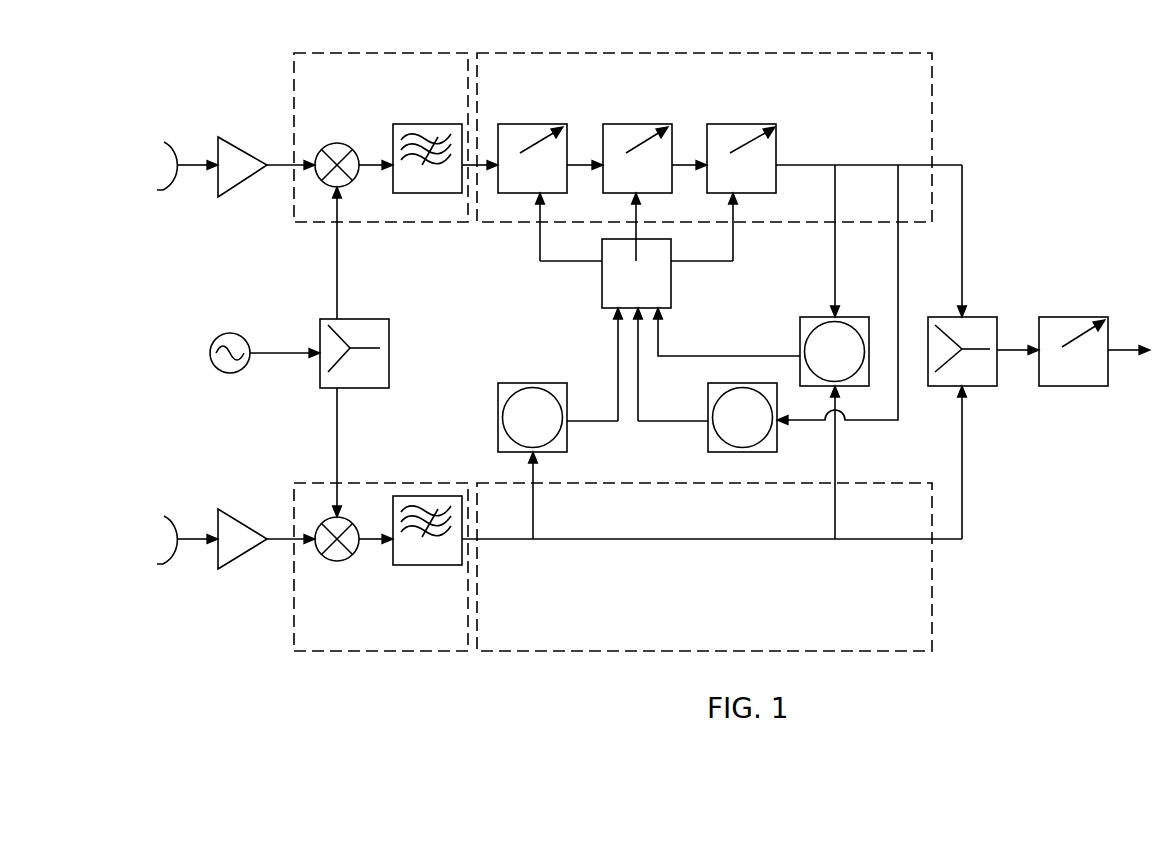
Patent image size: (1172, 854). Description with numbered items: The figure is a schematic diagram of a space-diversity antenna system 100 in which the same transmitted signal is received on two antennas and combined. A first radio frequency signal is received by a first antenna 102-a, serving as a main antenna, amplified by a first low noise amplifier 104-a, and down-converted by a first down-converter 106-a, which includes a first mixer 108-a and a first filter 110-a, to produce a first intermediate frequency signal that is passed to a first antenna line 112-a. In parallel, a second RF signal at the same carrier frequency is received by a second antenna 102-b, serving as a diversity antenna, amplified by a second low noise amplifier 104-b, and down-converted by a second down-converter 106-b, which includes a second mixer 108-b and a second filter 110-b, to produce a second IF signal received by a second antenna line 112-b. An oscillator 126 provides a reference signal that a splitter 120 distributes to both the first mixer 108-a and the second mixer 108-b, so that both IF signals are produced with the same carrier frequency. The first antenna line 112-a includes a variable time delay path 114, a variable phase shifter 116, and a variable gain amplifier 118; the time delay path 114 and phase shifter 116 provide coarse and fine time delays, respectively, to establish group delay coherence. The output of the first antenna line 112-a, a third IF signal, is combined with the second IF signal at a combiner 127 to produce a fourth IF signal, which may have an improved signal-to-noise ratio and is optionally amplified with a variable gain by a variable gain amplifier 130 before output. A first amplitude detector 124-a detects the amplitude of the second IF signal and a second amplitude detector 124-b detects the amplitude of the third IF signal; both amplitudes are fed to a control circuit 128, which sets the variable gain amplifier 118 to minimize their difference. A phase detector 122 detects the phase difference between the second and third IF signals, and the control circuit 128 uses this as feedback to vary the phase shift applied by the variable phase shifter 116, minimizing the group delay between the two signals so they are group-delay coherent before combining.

The space-diversity antenna system 100 is at (1103, 80).
The first antenna 102-a is at (166, 141).
The second antenna 102-b is at (166, 515).
The first low noise amplifier 104-a is at (260, 172).
The second low noise amplifier 104-b is at (260, 546).
The first down-converter 106-a is at (338, 74).
The second down-converter 106-b is at (338, 646).
The first mixer 108-a is at (346, 145).
The second mixer 108-b is at (348, 558).
The first filter 110-a is at (448, 186).
The second filter 110-b is at (448, 558).
The first antenna line 112-a is at (522, 74).
The second antenna line 112-b is at (521, 646).
The variable time delay path 114 is at (547, 186).
The variable phase shifter 116 is at (651, 186).
The variable gain amplifier 118 is at (755, 186).
The splitter 120 is at (379, 386).
The phase detector 122 is at (848, 360).
The first amplitude detector 124-a is at (552, 424).
The second amplitude detector 124-b is at (762, 424).
The oscillator 126 is at (239, 333).
The combiner 127 is at (977, 380).
The control circuit 128 is at (650, 278).
The variable gain amplifier 130 is at (1087, 380).